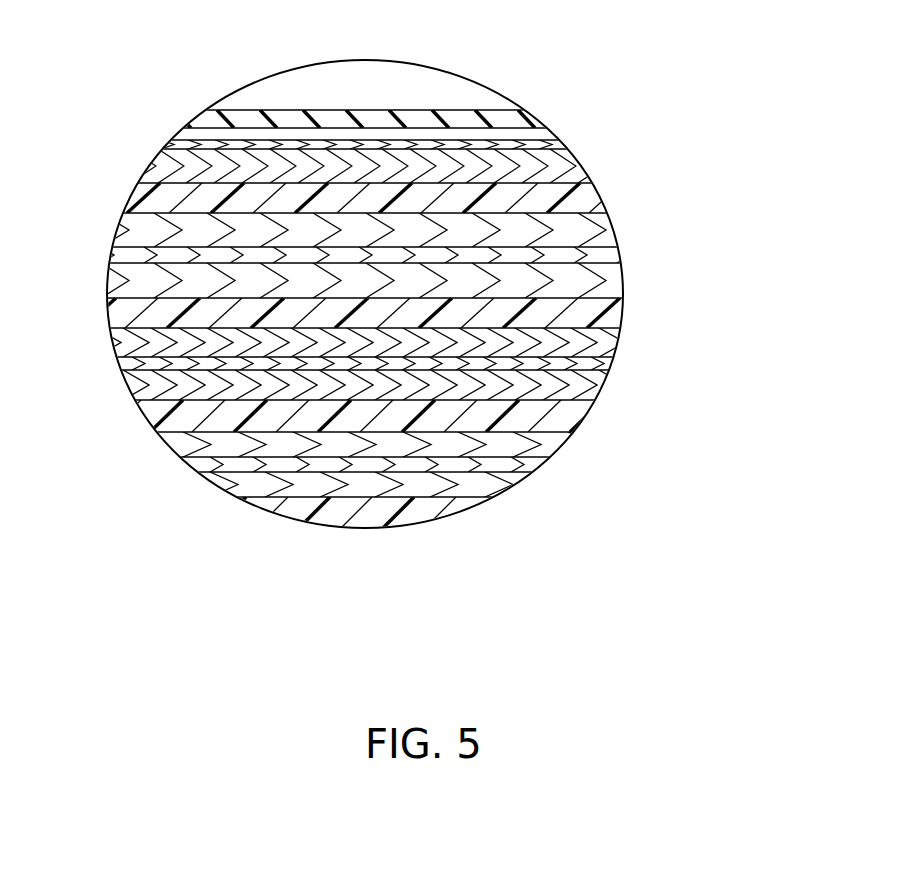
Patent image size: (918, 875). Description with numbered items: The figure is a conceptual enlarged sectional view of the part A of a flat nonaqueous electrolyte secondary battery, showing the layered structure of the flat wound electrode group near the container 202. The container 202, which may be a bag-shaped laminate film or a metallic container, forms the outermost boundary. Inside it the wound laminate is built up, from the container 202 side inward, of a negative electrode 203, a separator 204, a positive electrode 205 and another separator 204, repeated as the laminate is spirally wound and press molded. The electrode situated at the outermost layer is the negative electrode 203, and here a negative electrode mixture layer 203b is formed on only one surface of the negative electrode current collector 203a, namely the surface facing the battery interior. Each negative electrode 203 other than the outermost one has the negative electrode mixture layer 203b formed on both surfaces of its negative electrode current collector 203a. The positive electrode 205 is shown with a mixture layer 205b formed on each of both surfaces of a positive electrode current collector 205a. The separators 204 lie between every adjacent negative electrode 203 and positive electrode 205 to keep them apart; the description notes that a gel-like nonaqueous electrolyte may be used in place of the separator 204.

The part A is at (253, 98).
The container 202 is at (512, 122).
The negative electrode 203 is at (467, 266).
The negative electrode current collector 203a is at (547, 145).
The negative electrode mixture layer 203b is at (558, 168).
The separator 204 is at (143, 202).
The positive electrode 205 is at (465, 381).
The positive electrode current collector 205a is at (588, 257).
The negative electrode mixture layer 205b is at (587, 235).